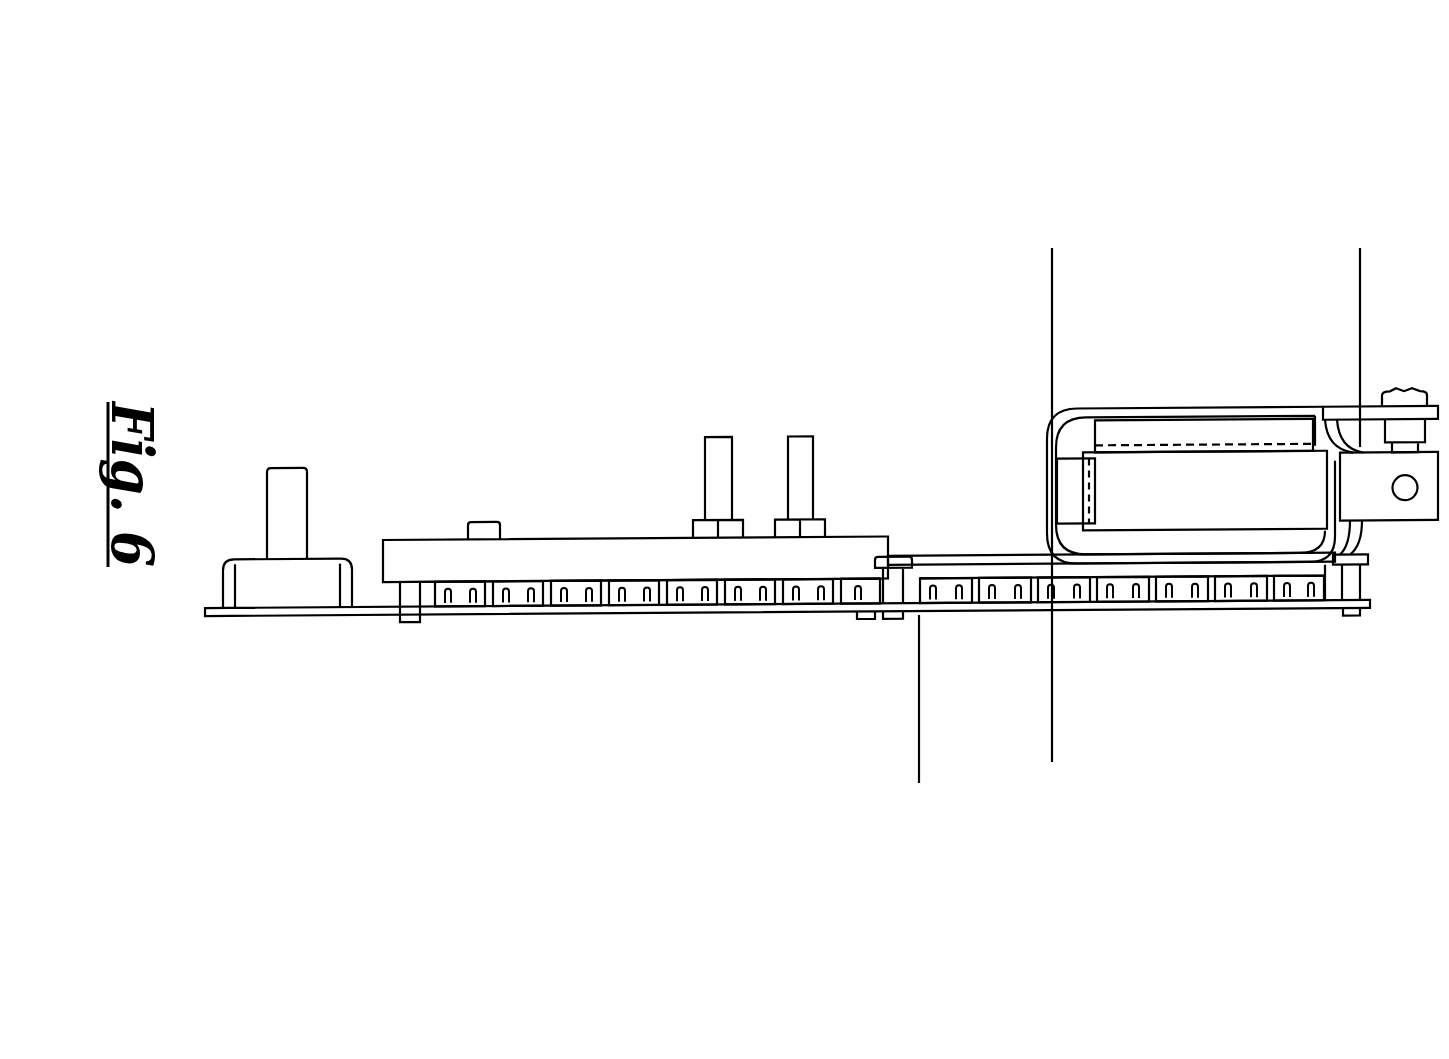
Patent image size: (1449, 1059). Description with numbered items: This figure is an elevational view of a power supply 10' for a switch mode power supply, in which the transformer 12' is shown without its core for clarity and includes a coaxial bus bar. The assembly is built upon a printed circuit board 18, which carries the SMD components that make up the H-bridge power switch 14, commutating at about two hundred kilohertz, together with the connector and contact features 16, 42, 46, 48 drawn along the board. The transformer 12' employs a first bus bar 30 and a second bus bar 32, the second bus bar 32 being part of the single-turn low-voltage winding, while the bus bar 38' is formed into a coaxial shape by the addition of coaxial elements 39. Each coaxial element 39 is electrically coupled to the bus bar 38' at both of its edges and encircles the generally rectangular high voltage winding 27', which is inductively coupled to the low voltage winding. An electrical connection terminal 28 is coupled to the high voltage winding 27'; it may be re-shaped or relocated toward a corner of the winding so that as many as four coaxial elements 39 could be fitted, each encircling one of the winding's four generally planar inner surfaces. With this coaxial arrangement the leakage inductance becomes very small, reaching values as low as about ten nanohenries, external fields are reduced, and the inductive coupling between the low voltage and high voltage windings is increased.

The power supply 10' is at (776, 470).
The transformer 12' is at (1191, 410).
The H-bridge power switch 14 is at (570, 524).
The plug connector 16 is at (445, 607).
The printed circuit board 18 is at (205, 610).
The high voltage winding 27' is at (1148, 471).
The electrical connection terminal 28 is at (1425, 507).
The first bus bar 30 is at (632, 562).
The second bus bar 32 is at (1303, 568).
The bus bar 38' is at (1026, 453).
The coaxial elements 39 is at (1173, 435).
The first connection pins 42 is at (724, 630).
The second connection pins 46 is at (1107, 638).
The plug contacts 48 is at (803, 704).